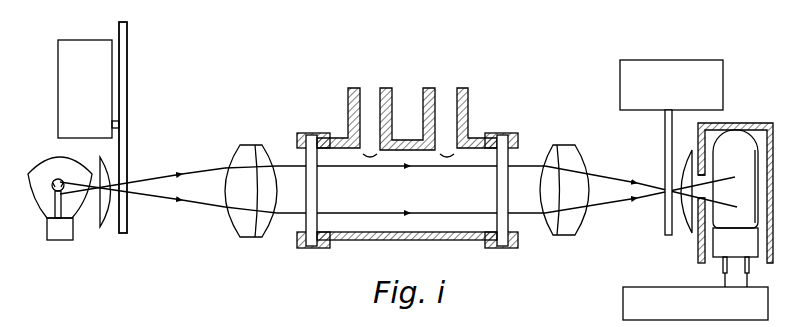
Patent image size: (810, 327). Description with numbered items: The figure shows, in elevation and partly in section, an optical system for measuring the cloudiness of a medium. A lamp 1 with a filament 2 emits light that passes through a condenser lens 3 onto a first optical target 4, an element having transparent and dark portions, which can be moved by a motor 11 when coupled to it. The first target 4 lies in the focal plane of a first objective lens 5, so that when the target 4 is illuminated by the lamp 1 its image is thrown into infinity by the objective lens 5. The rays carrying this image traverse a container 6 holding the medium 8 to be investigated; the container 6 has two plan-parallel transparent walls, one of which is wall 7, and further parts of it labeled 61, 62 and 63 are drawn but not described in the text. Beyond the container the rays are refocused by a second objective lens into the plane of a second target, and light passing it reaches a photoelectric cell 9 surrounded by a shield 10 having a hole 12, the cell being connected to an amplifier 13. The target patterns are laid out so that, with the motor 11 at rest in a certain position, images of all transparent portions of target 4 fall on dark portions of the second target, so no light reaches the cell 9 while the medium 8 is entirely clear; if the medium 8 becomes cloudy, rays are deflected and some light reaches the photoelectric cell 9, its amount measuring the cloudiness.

The lamp 1 is at (40, 157).
The filament 2 is at (48, 200).
The condenser lens 3 is at (104, 220).
The first optical target 4 is at (130, 221).
The first objective lens 5 is at (236, 232).
The container 6 is at (410, 139).
The flange 61 is at (306, 133).
The tube wall 62 is at (348, 115).
The tube wall 63 is at (468, 104).
The transparent wall 7 is at (303, 227).
The medium 8 is at (425, 223).
The hole 12 is at (698, 148).
The shield 10 is at (730, 123).
The photoelectric cell 9 is at (758, 128).
The motor 11 is at (58, 84).
The amplifier 13 is at (660, 283).